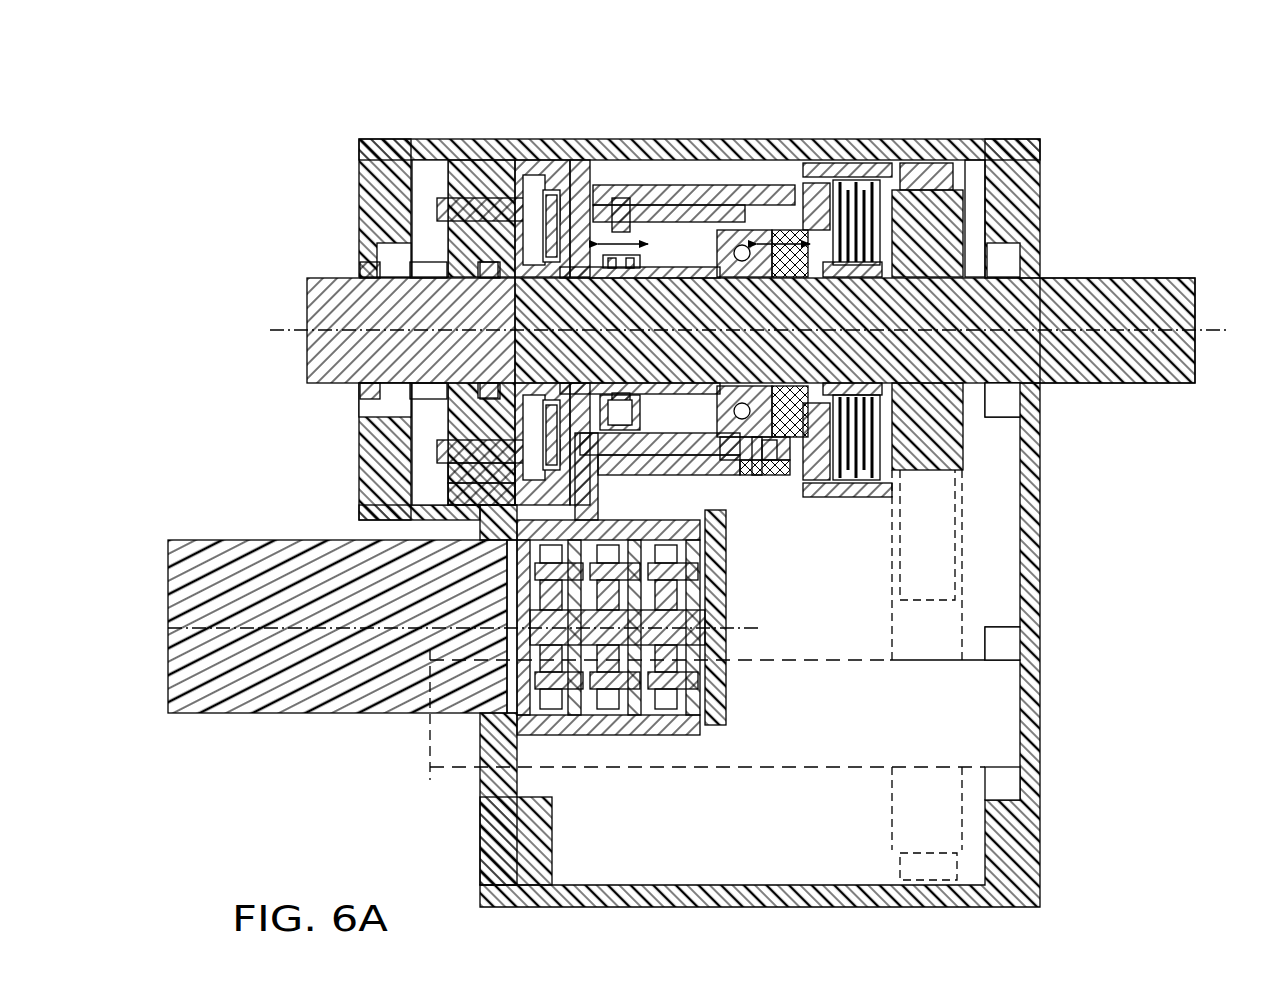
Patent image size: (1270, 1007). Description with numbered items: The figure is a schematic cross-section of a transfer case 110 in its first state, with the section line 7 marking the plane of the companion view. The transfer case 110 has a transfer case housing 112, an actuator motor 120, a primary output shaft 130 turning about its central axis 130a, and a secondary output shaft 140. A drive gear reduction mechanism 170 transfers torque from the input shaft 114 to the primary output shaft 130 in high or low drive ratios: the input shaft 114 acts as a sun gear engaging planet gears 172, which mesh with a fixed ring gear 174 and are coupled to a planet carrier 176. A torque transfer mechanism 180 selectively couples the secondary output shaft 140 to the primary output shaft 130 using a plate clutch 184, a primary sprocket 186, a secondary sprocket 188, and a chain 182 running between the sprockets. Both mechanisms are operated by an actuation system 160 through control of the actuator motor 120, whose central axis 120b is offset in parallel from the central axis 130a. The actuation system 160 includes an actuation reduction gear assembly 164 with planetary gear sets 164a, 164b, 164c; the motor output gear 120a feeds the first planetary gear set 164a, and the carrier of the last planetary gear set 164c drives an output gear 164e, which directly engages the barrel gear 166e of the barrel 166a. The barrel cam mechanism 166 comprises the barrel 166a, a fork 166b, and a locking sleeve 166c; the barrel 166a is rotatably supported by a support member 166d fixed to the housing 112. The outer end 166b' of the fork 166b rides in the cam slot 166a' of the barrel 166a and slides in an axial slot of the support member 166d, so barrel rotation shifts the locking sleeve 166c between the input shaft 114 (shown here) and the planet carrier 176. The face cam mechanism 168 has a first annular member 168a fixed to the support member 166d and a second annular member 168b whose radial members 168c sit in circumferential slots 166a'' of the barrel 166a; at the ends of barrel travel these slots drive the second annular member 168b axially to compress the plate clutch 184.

The section line 7 is at (757, 122).
The transfer case 110 is at (296, 105).
The transfer case housing 112 is at (386, 139).
The input shaft 114 is at (305, 300).
The actuator motor 120 is at (275, 720).
The motor output gear 120a is at (455, 640).
The central axis 120b is at (220, 620).
The primary output shaft 130 is at (1128, 388).
The central axis 130a is at (1218, 340).
The secondary output shaft 140 is at (460, 780).
The actuation system 160 is at (812, 578).
The actuation reduction gear assembly 164 is at (742, 690).
The first planetary gear set 164a is at (527, 740).
The planetary gear set 164b is at (586, 740).
The last planetary gear set 164c is at (646, 740).
The output gear 164e is at (728, 585).
The barrel cam mechanism 166 is at (718, 175).
The barrel 166a is at (694, 161).
The cam slot 166a' is at (641, 172).
The circumferential slots 166a'' is at (799, 483).
The fork 166b is at (618, 131).
The outer end 166b' is at (618, 239).
The locking sleeve 166c is at (470, 270).
The support member 166d is at (578, 160).
The barrel gear 166e is at (694, 494).
The face cam mechanism 168 is at (790, 212).
The first annular member 168a is at (752, 615).
The second annular member 168b is at (752, 477).
The radial members 168c is at (768, 477).
The drive gear reduction mechanism 170 is at (428, 182).
The planet gears 172 is at (460, 478).
The fixed ring gear 174 is at (470, 493).
The planet carrier 176 is at (445, 448).
The torque transfer mechanism 180 is at (968, 225).
The chain 182 is at (912, 163).
The plate clutch 184 is at (836, 163).
The primary sprocket 186 is at (938, 170).
The secondary sprocket 188 is at (890, 826).